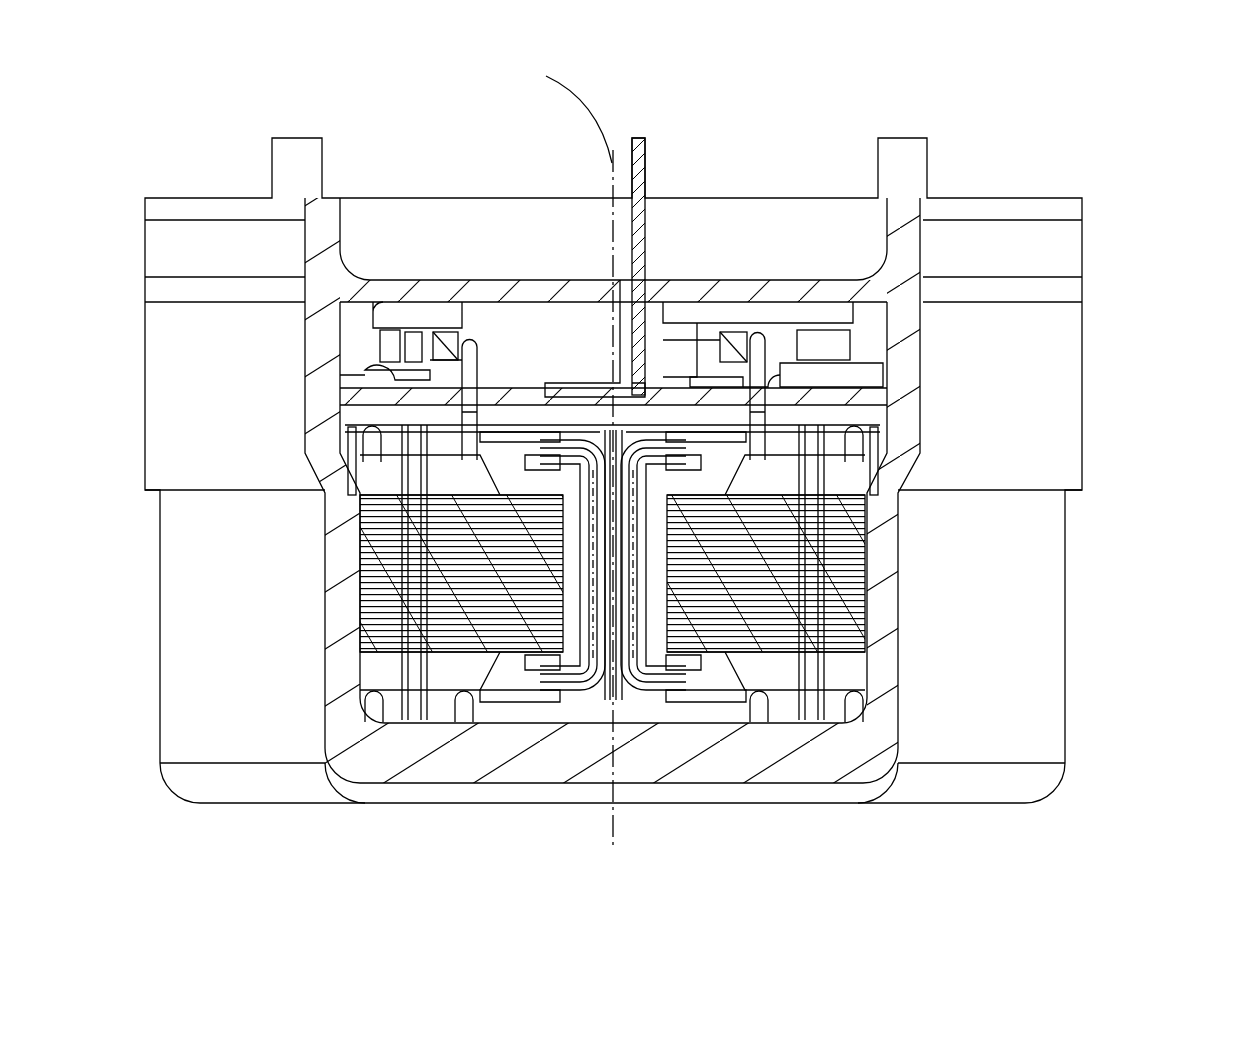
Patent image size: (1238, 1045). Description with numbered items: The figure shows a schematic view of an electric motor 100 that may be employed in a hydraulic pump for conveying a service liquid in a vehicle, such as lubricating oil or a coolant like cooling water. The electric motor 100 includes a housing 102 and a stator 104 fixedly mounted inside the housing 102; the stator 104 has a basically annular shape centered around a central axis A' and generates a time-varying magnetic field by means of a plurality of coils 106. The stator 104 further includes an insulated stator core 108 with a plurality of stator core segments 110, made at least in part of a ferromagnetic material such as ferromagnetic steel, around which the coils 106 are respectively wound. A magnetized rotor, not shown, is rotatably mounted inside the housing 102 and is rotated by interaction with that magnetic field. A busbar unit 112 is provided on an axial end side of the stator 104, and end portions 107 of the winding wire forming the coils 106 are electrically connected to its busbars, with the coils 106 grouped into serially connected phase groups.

The electric motor 100 is at (1045, 137).
The housing 102 is at (1024, 381).
The stator 104 is at (872, 607).
The coils 106 is at (585, 688).
The end portions 107 is at (762, 333).
The insulated stator core 108 is at (843, 480).
The stator core segments 110 is at (865, 556).
The busbar unit 112 is at (708, 352).